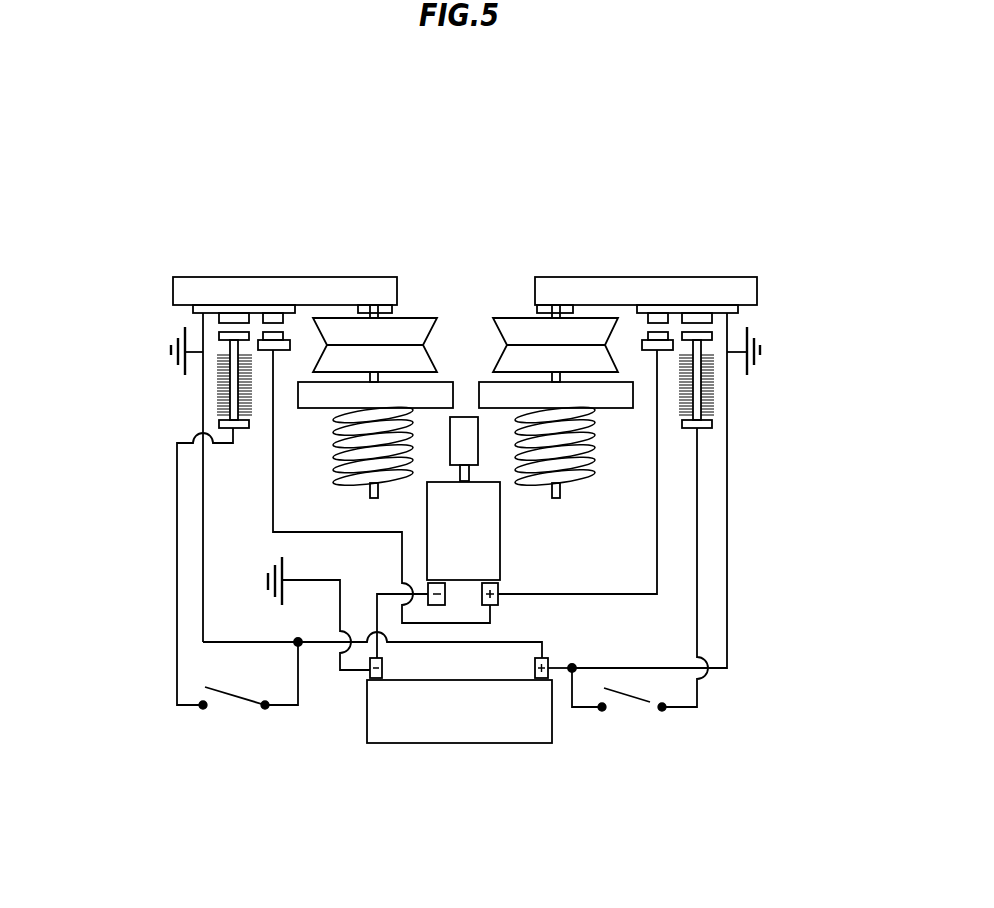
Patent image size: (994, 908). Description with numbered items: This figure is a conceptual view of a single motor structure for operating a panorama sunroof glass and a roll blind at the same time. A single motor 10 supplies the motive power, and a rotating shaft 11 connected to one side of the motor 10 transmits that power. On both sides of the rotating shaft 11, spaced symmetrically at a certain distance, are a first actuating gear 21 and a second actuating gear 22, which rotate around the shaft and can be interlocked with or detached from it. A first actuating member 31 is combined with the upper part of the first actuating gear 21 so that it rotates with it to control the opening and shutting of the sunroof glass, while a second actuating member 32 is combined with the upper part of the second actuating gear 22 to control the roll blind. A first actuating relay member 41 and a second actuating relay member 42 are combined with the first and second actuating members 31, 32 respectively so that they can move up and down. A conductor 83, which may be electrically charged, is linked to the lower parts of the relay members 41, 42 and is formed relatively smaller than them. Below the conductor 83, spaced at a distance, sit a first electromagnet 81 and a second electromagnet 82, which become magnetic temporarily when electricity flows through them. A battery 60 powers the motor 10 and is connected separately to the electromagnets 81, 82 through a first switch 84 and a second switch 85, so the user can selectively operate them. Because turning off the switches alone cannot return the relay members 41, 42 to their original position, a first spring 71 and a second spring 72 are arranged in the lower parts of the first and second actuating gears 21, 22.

The motor 10 is at (474, 567).
The rotating shaft 11 is at (465, 432).
The first actuating gear 21 is at (315, 400).
The second actuating gear 22 is at (615, 400).
The first actuating member 31 is at (400, 330).
The second actuating member 32 is at (530, 330).
The first actuating relay member 41 is at (313, 292).
The second actuating relay member 42 is at (617, 295).
The battery 60 is at (460, 732).
The first spring 71 is at (337, 455).
The second spring 72 is at (585, 455).
The first electromagnet 81 is at (217, 386).
The second electromagnet 82 is at (713, 388).
The conductor 83 is at (233, 312).
The first switch 84 is at (233, 703).
The second switch 85 is at (632, 705).